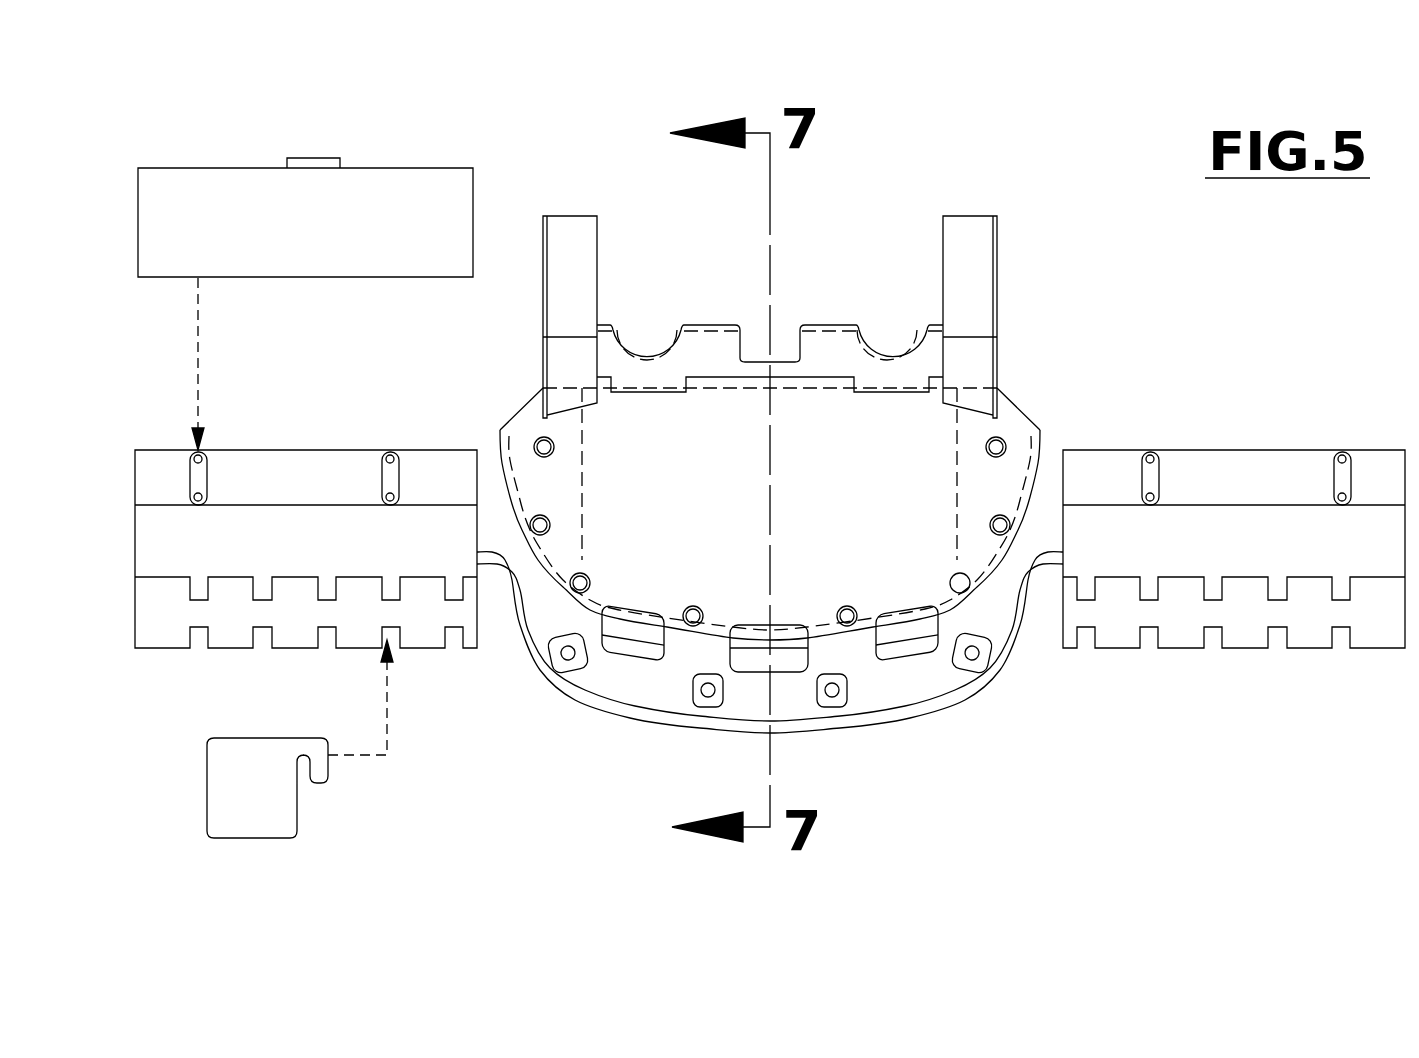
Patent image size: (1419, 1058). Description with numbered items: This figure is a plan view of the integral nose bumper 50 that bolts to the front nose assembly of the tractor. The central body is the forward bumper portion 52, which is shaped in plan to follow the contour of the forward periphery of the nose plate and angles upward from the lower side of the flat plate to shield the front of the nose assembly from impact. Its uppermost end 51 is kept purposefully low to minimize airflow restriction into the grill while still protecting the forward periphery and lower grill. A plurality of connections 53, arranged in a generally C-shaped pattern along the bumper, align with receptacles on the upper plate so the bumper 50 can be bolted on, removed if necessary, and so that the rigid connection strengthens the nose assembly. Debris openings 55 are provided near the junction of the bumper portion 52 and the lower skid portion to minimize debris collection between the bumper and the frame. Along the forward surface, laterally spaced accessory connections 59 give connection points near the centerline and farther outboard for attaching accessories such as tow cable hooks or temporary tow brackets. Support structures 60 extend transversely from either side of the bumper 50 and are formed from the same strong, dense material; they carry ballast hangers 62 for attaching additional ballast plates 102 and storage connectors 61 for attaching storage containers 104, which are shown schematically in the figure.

The integral nose bumper 50 is at (925, 751).
The uppermost end of forward bumper portion 51 is at (737, 728).
The forward bumper portion 52 is at (647, 736).
The connections 53 is at (532, 520).
The debris openings 55 is at (782, 622).
The accessory connections 59 is at (982, 660).
The support structures 60 is at (331, 678).
The storage connectors 61 is at (257, 457).
The ballast hangers 62 is at (231, 645).
The additional ballast plates 102 is at (260, 815).
The storage containers 104 is at (412, 168).